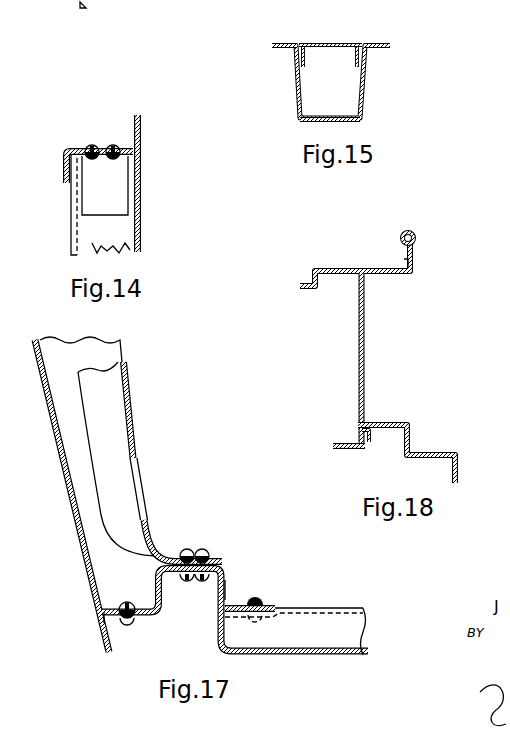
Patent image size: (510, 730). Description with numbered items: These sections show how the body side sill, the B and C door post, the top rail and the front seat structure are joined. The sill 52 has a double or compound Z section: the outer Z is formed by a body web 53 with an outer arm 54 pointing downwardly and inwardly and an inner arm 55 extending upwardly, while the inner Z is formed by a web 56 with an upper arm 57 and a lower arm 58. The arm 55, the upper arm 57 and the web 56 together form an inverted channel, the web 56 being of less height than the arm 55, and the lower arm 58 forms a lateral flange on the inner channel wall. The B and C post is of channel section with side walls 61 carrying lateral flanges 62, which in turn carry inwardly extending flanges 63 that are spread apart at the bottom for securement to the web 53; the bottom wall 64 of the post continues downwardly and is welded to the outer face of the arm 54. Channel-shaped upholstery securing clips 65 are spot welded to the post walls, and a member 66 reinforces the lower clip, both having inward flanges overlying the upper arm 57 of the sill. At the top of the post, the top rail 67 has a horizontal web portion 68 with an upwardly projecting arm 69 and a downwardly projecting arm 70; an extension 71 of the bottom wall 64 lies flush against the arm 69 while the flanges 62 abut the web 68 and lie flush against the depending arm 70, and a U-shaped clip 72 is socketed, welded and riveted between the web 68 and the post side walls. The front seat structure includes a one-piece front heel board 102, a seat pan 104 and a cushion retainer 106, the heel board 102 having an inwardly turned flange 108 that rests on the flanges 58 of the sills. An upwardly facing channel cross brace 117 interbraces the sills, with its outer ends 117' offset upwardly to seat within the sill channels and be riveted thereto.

In FIG. 18, the sill 52 is at (410, 425).
In FIG. 18, the body web 53 is at (443, 455).
In FIG. 17, the body web 53 is at (148, 617).
In FIG. 18, the outer arm 54 is at (458, 477).
In FIG. 17, the outer arm 54 is at (113, 642).
In FIG. 18, the inner arm 55 is at (411, 440).
In FIG. 17, the inner arm 55 is at (162, 590).
In FIG. 18, the web 56 is at (370, 437).
In FIG. 17, the web 56 is at (228, 585).
In FIG. 18, the upper arm 57 is at (387, 417).
In FIG. 17, the upper arm 57 is at (222, 562).
In FIG. 18, the lower arm 58 is at (337, 450).
In FIG. 17, the lower arm 58 is at (268, 607).
In FIG. 15, the side walls 61 is at (295, 90).
In FIG. 14, the lateral flanges 62 is at (71, 197).
In FIG. 15, the lateral flanges 62 is at (282, 43).
In FIG. 17, the inwardly extending flanges 63 is at (110, 607).
In FIG. 15, the bottom wall 64 is at (330, 121).
In FIG. 17, the bottom wall 64 is at (103, 620).
In FIG. 15, the upholstery securing clips 65 is at (307, 43).
In FIG. 17, the upholstery securing clips 65 is at (113, 392).
In FIG. 17, the member 66 is at (63, 393).
In FIG. 14, the top rail 67 is at (91, 145).
In FIG. 14, the web portion 68 is at (114, 145).
In FIG. 14, the upwardly projecting arm 69 is at (137, 117).
In FIG. 14, the downwardly projecting arm 70 is at (65, 169).
In FIG. 14, the extension 71 is at (142, 140).
In FIG. 14, the U-shaped clip 72 is at (122, 182).
In FIG. 18, the front heel board 102 is at (365, 333).
In FIG. 18, the seat pan 104 is at (302, 289).
In FIG. 18, the cushion retainer 106 is at (417, 250).
In FIG. 18, the inwardly turned flange 108 is at (343, 445).
In FIG. 17, the channel cross brace 117 is at (296, 646).
In FIG. 17, the outer ends 117' is at (206, 607).